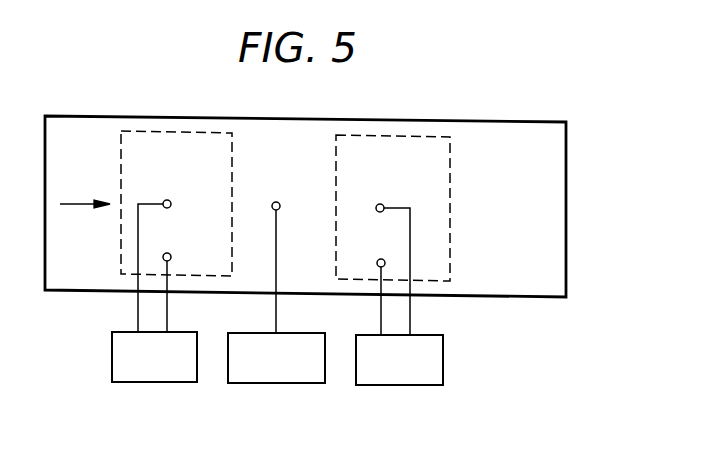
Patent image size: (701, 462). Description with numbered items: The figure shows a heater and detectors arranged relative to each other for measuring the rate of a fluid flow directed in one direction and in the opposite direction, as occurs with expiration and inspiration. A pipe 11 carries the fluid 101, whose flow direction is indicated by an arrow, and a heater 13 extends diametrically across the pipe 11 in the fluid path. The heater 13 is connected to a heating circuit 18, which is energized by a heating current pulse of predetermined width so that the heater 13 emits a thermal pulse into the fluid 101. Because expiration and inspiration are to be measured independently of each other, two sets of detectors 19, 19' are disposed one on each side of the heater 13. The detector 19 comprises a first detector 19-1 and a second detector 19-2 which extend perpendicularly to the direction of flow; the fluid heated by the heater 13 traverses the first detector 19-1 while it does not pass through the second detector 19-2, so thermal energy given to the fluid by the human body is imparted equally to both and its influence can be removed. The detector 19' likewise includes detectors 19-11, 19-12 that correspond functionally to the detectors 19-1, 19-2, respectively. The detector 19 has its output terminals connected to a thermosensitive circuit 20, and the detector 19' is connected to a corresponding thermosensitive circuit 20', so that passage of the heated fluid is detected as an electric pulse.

The pipe 11 is at (498, 120).
The fluid 101 is at (82, 205).
The second set of detectors 19' is at (202, 203).
The detector 19-11 is at (167, 200).
The detector 19-12 is at (167, 253).
The heater 13 is at (276, 202).
The detector 19 is at (419, 208).
The first detector 19-1 is at (380, 204).
The second detector 19-2 is at (382, 259).
The thermosensitive circuit 20' is at (167, 339).
The heating circuit 18 is at (300, 333).
The thermosensitive circuit 20 is at (411, 344).